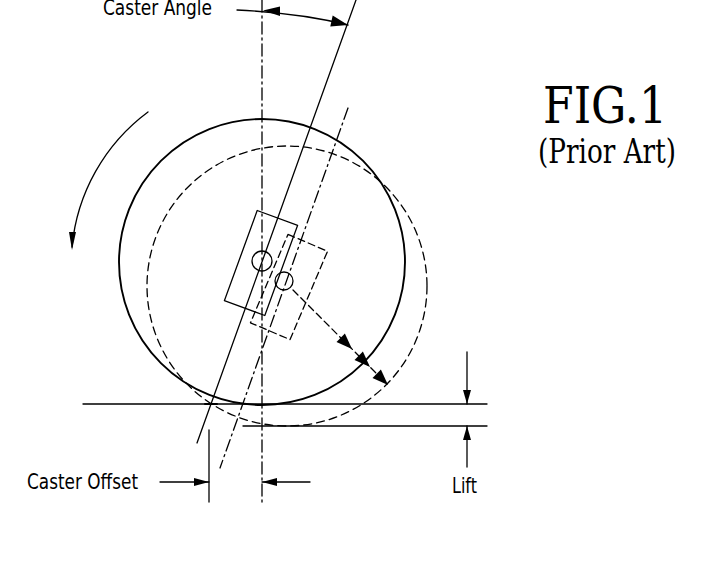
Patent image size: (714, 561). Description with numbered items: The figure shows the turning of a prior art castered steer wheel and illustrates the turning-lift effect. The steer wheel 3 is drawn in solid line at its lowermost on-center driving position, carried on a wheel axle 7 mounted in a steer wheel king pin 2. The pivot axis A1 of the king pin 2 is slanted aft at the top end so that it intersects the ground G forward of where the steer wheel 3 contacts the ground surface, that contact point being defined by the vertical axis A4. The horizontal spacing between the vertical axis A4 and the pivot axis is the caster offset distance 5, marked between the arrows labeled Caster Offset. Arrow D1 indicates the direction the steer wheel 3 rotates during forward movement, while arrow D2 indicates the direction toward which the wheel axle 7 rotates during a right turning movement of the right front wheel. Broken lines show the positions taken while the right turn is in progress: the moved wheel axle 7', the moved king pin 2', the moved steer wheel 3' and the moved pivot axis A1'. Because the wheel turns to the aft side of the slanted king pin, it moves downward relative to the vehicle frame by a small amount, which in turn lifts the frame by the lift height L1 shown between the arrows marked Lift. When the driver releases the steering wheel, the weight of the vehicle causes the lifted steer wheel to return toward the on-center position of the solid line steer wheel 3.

The steer wheel king pin 2 is at (245, 263).
The moved position of the king pin 2' is at (308, 264).
The steer wheel 3 is at (227, 262).
The moved position of the steer wheel 3' is at (335, 286).
The caster offset distance 5 is at (237, 480).
The wheel axle 7 is at (219, 285).
The moved position of the wheel axle 7' is at (374, 244).
The pivot axis A1 is at (322, 221).
The moved position of the king pin pivot axis A1' is at (333, 285).
The vertical axis A4 is at (262, 62).
The direction of wheel rotation D1 is at (97, 163).
The direction of axle rotation during right turn D2 is at (325, 324).
The ground G is at (102, 405).
The lift height L1 is at (470, 416).